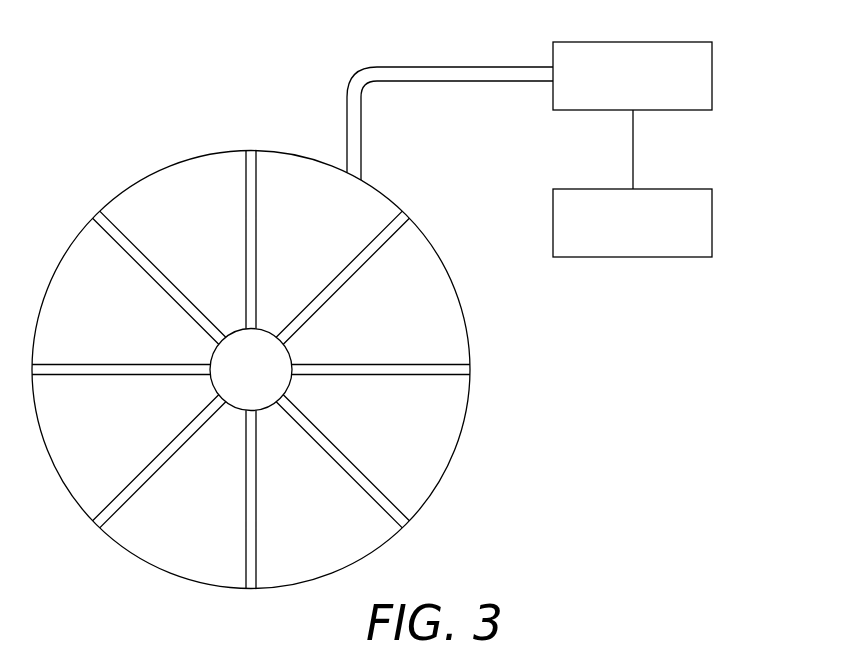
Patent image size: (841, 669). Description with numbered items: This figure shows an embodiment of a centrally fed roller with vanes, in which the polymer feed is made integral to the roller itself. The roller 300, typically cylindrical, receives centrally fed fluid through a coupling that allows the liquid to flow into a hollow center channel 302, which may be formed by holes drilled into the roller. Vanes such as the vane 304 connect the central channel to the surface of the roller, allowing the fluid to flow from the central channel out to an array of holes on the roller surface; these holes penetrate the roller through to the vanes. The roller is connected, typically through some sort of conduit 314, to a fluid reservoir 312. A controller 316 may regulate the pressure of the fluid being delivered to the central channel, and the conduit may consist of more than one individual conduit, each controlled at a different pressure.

The roller 300 is at (132, 185).
The hollow center channel 302 is at (266, 330).
The vane 304 is at (471, 369).
The fluid reservoir 312 is at (682, 42).
The conduit 314 is at (368, 68).
The controller 316 is at (673, 257).